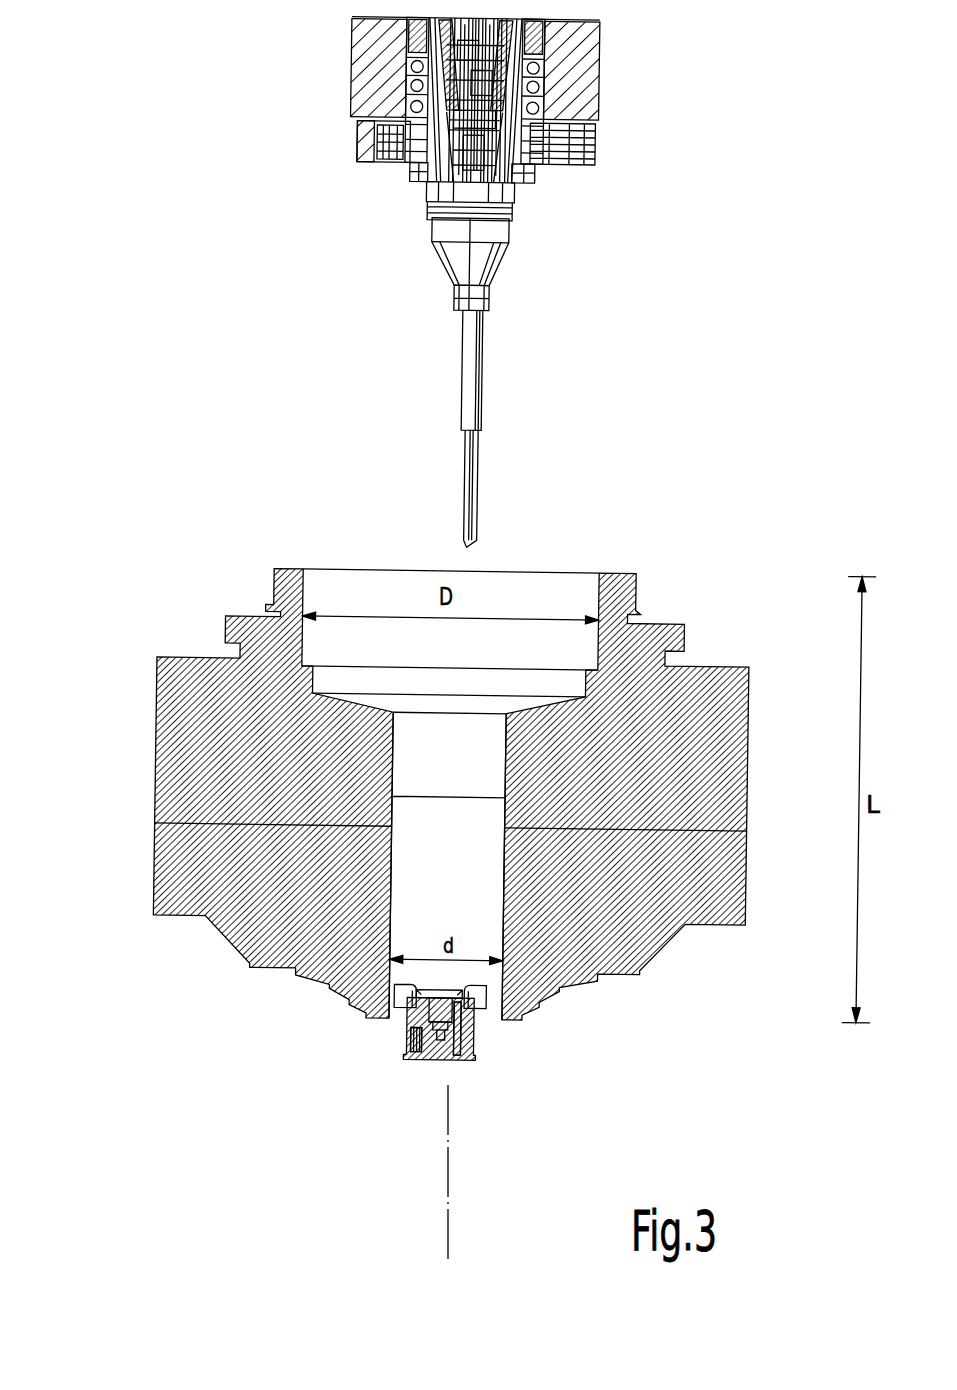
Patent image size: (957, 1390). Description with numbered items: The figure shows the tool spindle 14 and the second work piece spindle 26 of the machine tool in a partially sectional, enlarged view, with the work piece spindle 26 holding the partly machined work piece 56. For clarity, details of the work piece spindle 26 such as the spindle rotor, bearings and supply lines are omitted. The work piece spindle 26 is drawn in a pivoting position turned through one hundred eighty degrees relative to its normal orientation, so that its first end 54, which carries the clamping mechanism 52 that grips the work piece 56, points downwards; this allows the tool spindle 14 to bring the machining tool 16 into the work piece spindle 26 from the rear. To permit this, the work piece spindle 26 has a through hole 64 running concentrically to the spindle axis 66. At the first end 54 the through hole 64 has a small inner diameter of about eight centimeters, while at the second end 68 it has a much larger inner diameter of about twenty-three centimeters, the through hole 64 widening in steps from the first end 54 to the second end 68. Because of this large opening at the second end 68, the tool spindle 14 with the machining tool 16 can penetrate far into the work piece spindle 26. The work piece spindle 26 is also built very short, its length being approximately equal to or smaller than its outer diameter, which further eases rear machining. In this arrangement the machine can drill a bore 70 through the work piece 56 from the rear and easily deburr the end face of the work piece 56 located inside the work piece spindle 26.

The tool spindle 14 is at (597, 72).
The machining tool 16 is at (481, 390).
The second work piece spindle 26 is at (155, 752).
The clamping mechanism 52 is at (397, 1022).
The first end 54 is at (540, 1062).
The work piece 56 is at (438, 1063).
The through hole 64 is at (470, 897).
The spindle axis 66 is at (448, 1232).
The second end 68 is at (620, 563).
The bore 70 is at (462, 1063).